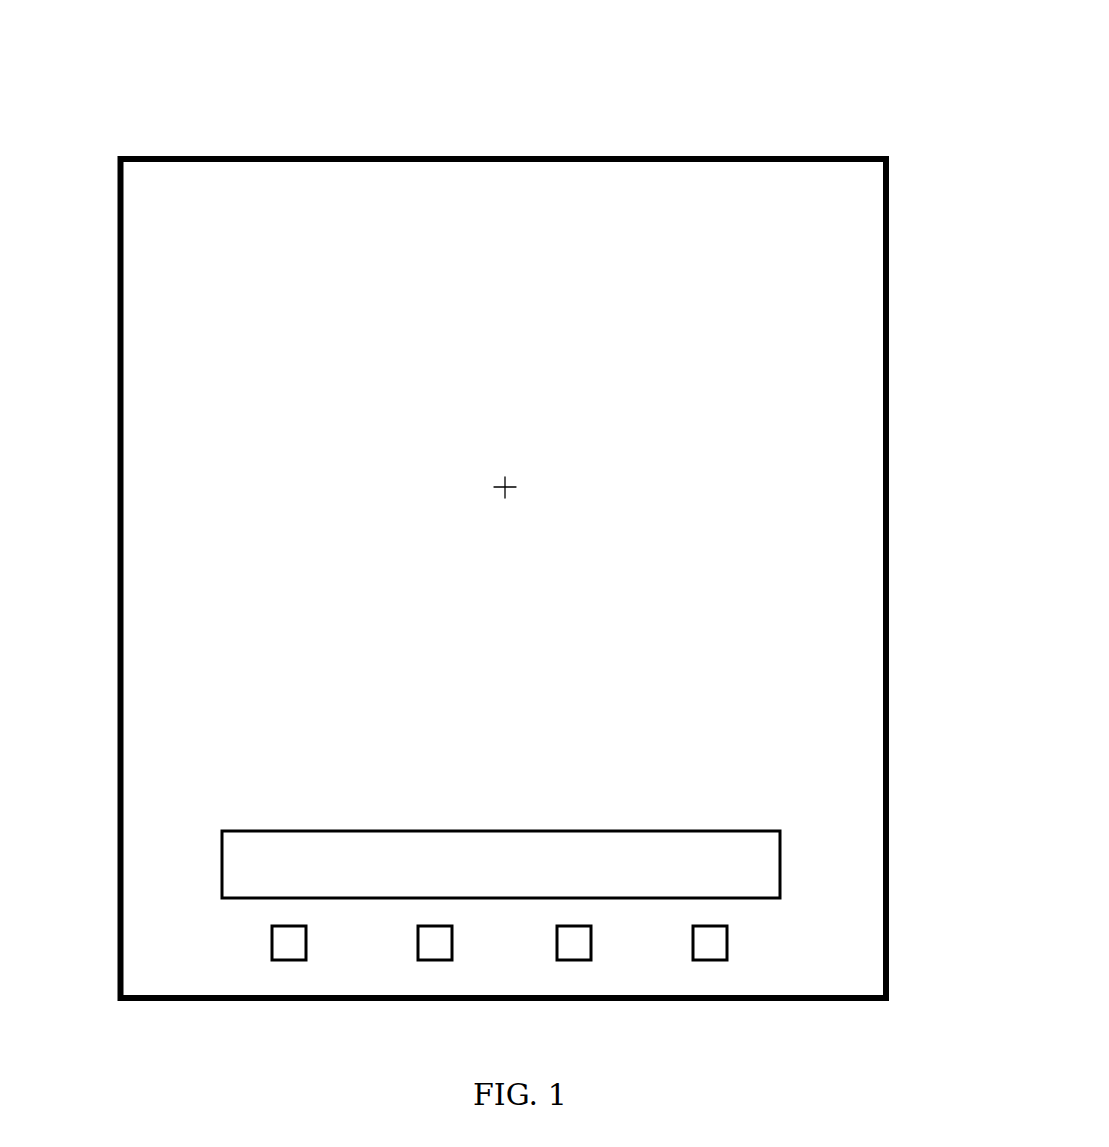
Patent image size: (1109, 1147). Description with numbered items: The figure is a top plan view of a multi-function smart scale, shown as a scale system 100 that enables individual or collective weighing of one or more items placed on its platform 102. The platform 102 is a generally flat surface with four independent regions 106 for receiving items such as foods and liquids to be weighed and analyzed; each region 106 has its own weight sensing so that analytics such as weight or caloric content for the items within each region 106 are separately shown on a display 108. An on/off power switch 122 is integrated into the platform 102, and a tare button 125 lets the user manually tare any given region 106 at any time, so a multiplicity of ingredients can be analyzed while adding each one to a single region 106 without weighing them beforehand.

The scale system 100 is at (751, 93).
The platform 102 is at (502, 222).
The regions 106 is at (330, 373).
The display 108 is at (780, 864).
The on/off power switch 122 is at (290, 942).
The tare button 125 is at (435, 942).